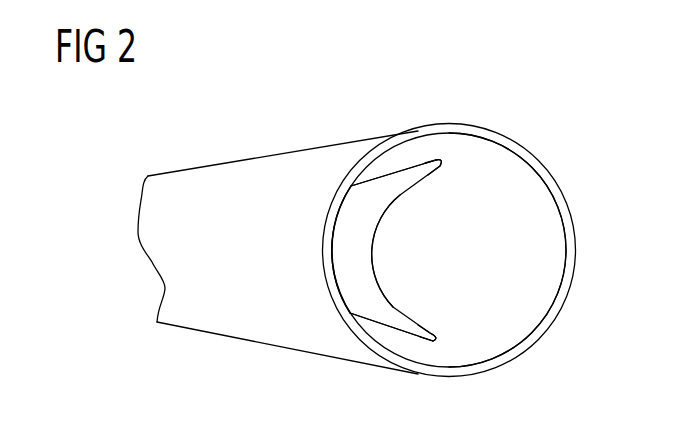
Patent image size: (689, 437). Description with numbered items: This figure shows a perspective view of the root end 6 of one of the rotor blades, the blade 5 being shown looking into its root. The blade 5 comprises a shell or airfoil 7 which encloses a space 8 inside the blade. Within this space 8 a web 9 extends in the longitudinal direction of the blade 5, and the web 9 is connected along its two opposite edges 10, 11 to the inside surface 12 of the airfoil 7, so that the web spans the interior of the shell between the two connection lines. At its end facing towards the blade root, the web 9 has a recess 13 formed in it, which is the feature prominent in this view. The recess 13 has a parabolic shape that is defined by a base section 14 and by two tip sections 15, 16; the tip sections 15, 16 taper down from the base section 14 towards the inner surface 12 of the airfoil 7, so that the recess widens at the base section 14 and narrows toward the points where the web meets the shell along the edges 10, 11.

The blade 5 is at (377, 222).
The root end 6 is at (262, 177).
The airfoil 7 is at (470, 234).
The space 8 is at (532, 288).
The web 9 is at (346, 260).
The edge 10 is at (428, 164).
The edge 11 is at (407, 340).
The inside surface 12 is at (520, 197).
The recess 13 is at (376, 255).
The base section 14 is at (357, 287).
The tip section 15 is at (400, 200).
The tip section 16 is at (391, 315).